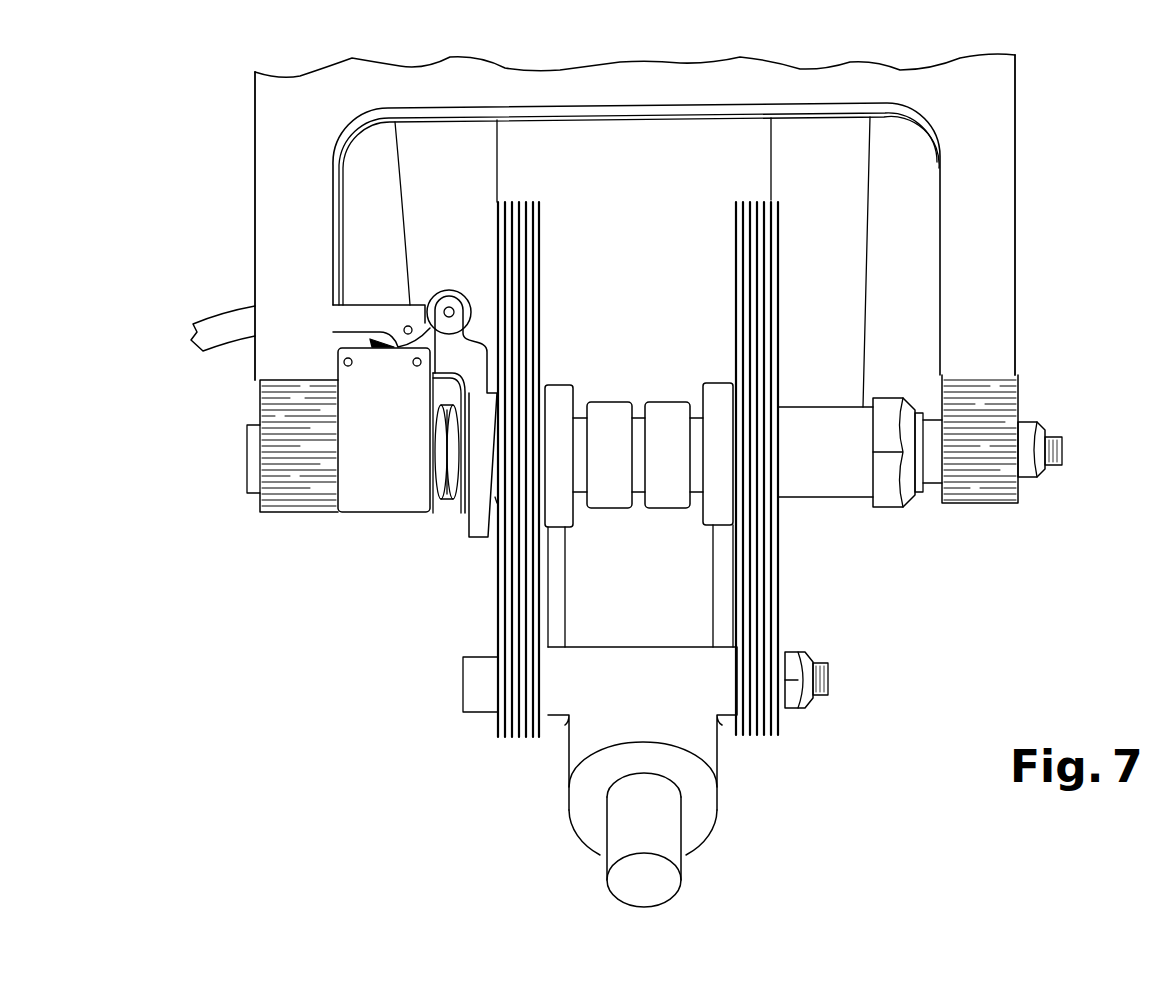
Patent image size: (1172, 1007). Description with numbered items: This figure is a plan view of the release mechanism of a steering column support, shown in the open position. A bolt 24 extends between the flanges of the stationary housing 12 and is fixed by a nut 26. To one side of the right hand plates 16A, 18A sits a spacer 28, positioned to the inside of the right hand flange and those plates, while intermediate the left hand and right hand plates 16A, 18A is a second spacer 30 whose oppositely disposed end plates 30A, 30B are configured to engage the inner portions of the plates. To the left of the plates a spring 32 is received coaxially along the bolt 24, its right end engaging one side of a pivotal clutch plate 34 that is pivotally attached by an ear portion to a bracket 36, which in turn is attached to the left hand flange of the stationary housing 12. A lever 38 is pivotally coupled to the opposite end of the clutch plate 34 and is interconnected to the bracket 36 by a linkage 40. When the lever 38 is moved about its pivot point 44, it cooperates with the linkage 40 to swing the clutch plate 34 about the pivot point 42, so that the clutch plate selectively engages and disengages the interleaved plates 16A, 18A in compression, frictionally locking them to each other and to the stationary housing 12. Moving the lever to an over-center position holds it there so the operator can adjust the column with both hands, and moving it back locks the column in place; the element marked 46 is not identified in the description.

The stationary housing 12 is at (988, 293).
The second plate 16A is at (735, 527).
The third plate 18A is at (782, 545).
The bolt 24 is at (436, 457).
The nut 26 is at (1028, 470).
The spacer 28 is at (820, 483).
The second spacer 30 is at (668, 401).
The end plate 30A is at (568, 385).
The end plate 30B is at (718, 390).
The spring 32 is at (447, 504).
The pivotal clutch plate 34 is at (475, 369).
The bracket 36 is at (363, 508).
The lever 38 is at (386, 314).
The linkage 40 is at (388, 350).
The pivot point 42 is at (416, 366).
The pivot point 44 is at (449, 306).
The hole 46 is at (407, 343).